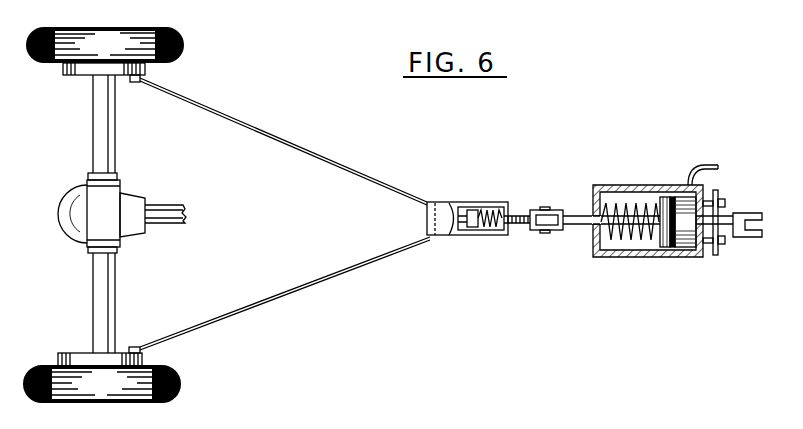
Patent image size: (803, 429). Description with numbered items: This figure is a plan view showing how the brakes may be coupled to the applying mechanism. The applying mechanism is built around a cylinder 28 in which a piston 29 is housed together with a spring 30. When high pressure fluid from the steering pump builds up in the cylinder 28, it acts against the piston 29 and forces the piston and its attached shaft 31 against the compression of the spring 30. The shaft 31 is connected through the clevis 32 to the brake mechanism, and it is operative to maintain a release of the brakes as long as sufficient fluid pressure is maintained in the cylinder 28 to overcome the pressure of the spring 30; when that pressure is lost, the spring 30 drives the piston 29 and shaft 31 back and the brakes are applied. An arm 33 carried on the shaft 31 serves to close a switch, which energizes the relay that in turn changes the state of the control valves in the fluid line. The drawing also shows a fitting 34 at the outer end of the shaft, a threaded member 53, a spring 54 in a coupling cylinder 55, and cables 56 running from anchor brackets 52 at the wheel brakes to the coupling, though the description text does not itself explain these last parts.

The cylinder 28 is at (642, 185).
The piston 29 is at (663, 249).
The spring 30 is at (623, 232).
The shaft 31 is at (576, 226).
The clevis 32 is at (550, 208).
The arm 33 is at (718, 192).
The clevis 34 is at (755, 238).
The cable anchor brackets 52 is at (135, 82).
The threaded rod 53 is at (521, 212).
The spring and piston 54 is at (492, 231).
The cable cylinder 55 is at (443, 237).
The cables 56 is at (301, 288).